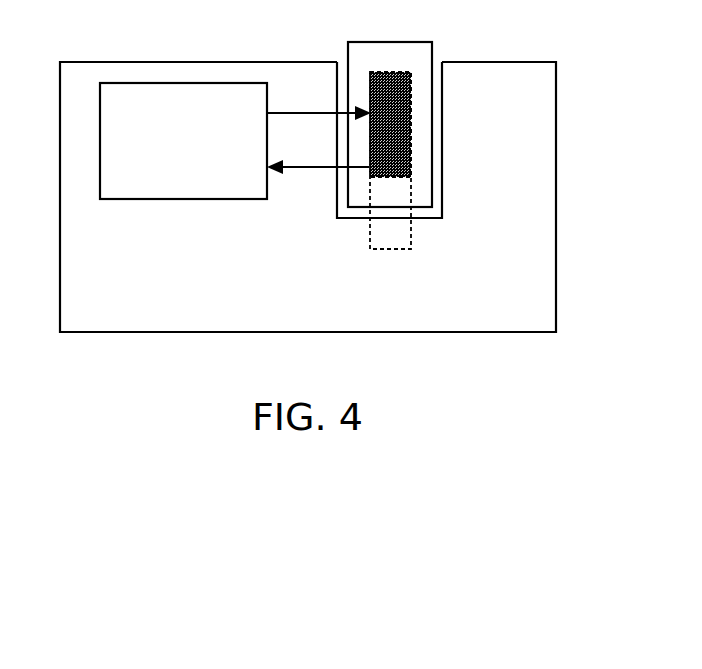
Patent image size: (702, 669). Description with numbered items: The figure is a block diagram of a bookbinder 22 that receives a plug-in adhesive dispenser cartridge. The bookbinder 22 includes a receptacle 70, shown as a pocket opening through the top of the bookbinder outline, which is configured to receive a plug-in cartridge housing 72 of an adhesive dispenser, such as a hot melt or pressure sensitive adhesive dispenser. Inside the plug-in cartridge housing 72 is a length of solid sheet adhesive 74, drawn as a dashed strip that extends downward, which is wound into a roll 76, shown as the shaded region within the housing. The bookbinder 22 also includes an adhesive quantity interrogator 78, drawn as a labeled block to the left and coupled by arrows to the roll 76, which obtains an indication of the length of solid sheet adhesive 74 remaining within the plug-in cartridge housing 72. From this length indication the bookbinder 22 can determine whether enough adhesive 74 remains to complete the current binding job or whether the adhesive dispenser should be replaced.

The bookbinder 22 is at (557, 182).
The receptacle 70 is at (442, 128).
The plug-in cartridge housing 72 is at (392, 41).
The solid sheet adhesive 74 is at (411, 240).
The roll 76 is at (411, 162).
The adhesive quantity interrogator 78 is at (183, 199).